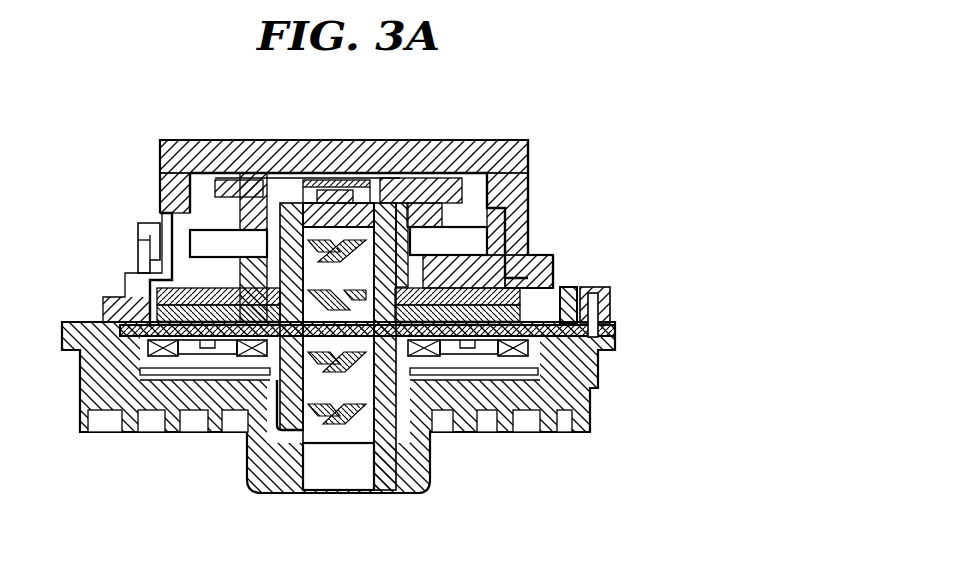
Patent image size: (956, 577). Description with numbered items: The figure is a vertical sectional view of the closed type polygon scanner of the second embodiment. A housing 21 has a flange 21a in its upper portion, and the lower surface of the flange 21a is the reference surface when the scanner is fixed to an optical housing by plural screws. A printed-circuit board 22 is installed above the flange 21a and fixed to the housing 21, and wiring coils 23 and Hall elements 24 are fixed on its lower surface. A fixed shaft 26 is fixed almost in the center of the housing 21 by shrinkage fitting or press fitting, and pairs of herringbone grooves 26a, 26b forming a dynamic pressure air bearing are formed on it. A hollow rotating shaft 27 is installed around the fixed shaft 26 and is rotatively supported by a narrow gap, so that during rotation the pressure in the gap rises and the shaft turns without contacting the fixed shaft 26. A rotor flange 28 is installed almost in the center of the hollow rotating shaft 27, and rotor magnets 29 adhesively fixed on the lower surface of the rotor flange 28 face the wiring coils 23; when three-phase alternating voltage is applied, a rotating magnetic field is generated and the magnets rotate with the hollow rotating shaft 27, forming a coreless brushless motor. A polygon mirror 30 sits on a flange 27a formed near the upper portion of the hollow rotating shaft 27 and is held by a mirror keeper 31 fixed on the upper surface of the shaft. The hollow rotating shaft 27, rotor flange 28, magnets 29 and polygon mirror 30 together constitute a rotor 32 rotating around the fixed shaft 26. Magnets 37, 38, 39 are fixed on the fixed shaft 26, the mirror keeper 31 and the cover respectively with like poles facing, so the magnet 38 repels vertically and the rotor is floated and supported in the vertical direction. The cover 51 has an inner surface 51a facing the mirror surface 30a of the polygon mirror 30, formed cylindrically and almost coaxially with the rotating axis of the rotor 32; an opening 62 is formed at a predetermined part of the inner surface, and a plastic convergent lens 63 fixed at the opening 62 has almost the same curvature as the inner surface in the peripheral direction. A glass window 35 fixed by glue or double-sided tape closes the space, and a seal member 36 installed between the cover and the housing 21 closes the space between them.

The housing 21 is at (575, 400).
The flange 21a is at (605, 337).
The printed-circuit board 22 is at (568, 380).
The wiring coils 23 is at (445, 360).
The Hall elements 24 is at (470, 354).
The fixed shaft 26 is at (327, 385).
The herringbone grooves 26a is at (338, 457).
The herringbone grooves 26b is at (337, 332).
The hollow rotating shaft 27 is at (385, 420).
The flange 27a is at (495, 265).
The rotor flange 28 is at (157, 297).
The rotor magnets 29 is at (200, 380).
The polygon mirror 30 is at (498, 150).
The mirror surface 30a is at (500, 240).
The mirror keeper 31 is at (428, 150).
The rotor 32 is at (567, 150).
The glass window 35 is at (612, 308).
The seal member 36 is at (568, 290).
The magnet 37 is at (300, 180).
The magnet 38 is at (345, 190).
The magnet 39 is at (318, 190).
The cover 51 is at (523, 142).
The inner surface 51a is at (545, 192).
The opening 62 is at (162, 245).
The plastic convergent lens 63 is at (152, 252).